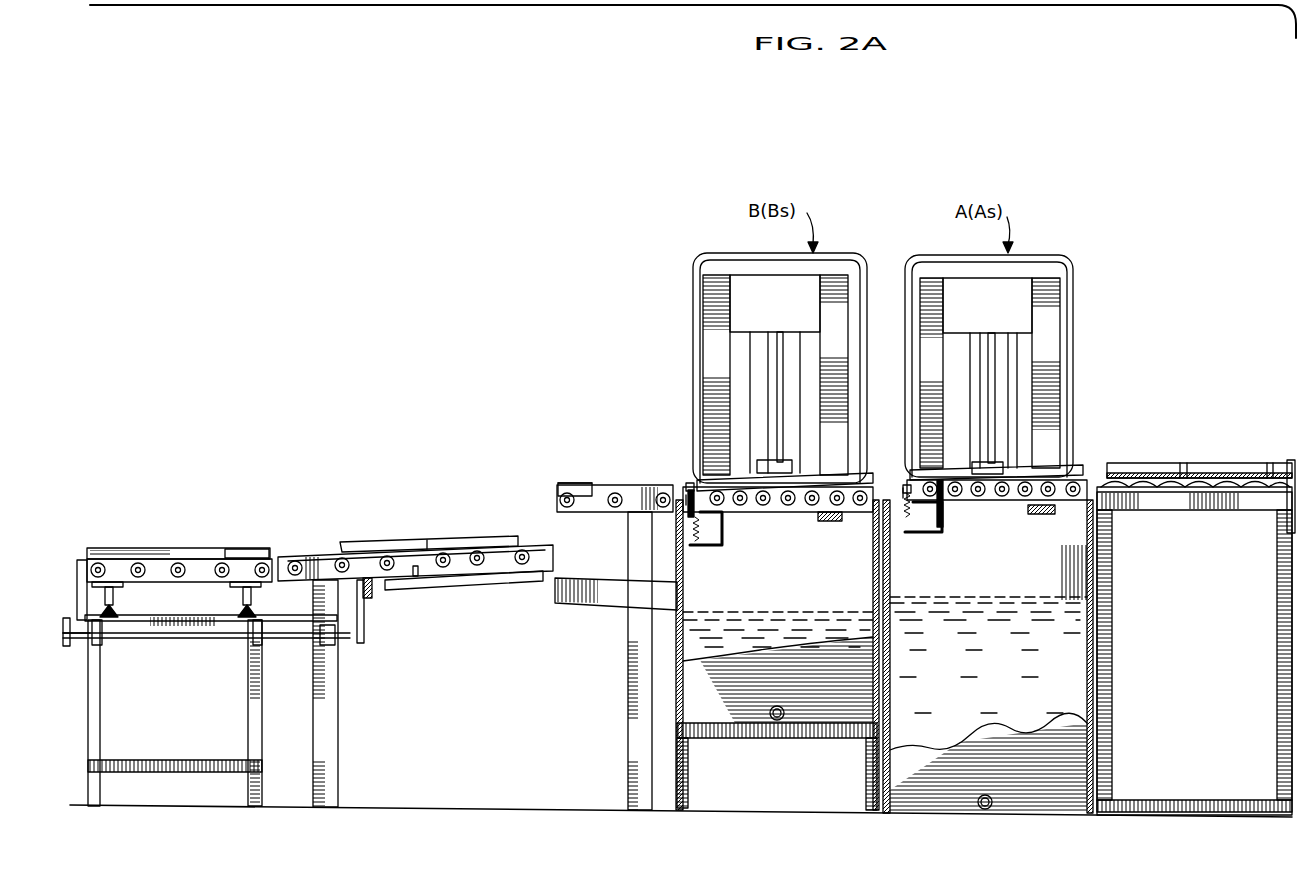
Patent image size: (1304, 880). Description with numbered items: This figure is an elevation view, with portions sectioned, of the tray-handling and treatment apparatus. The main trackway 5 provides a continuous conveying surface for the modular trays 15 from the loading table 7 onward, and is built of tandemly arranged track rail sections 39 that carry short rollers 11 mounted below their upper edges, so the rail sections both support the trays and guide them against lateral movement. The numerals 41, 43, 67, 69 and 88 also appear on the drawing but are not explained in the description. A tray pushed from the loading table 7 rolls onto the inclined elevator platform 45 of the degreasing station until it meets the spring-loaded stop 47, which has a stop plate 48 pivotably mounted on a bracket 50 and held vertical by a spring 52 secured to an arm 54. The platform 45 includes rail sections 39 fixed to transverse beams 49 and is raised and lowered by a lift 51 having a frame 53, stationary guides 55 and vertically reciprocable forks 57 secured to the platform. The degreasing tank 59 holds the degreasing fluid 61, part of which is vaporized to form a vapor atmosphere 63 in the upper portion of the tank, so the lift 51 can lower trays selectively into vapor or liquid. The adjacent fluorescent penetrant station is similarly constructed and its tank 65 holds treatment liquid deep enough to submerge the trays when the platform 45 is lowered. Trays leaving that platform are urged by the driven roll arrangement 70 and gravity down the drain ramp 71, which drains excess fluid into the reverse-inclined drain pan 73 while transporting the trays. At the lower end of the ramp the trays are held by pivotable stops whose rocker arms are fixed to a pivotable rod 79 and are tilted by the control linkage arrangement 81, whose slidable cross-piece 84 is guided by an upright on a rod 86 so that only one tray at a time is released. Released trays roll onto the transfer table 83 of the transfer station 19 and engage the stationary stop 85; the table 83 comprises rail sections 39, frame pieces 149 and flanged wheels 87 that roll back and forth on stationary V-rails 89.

The main trackway 5 is at (342, 536).
The loading table 7 is at (1290, 487).
The short rollers 11 is at (1080, 465).
The modular tray 15 is at (163, 555).
The tray transfer station 19 is at (137, 538).
The track rail section 39 is at (583, 512).
The roller bed 41 is at (1233, 473).
The table top 43 is at (1147, 498).
The elevator platform 45 is at (770, 507).
The spring-loaded stop 47 is at (732, 536).
The stop plate 48 is at (690, 495).
The transverse beam 49 is at (833, 522).
The bracket 50 is at (693, 497).
The lift 51 is at (1073, 315).
The spring 52 is at (690, 518).
The frame 53 is at (700, 262).
The arm 54 is at (705, 547).
The stationary guide 55 is at (715, 353).
The vertically reciprocable fork 57 is at (812, 343).
The tank 59 is at (893, 578).
The degreasing fluid 61 is at (1004, 703).
The vapor atmosphere 63 is at (1033, 581).
The tank 65 is at (684, 594).
The bath material 67 is at (774, 692).
The tank chamber 69 is at (821, 598).
The driven roll arrangement 70 is at (668, 486).
The drain ramp 71 is at (557, 488).
The drain pan 73 is at (483, 590).
The pivotable rod 79 is at (418, 576).
The control linkage arrangement 81 is at (378, 588).
The transfer table 83 is at (160, 575).
The slidable cross-piece 84 is at (367, 603).
The stationary stop 85 is at (70, 612).
The rod 86 is at (210, 640).
The flanged wheel 87 is at (252, 602).
The fitting 88 is at (65, 615).
The stationary V-rail 89 is at (103, 640).
The frame piece 149 is at (223, 556).